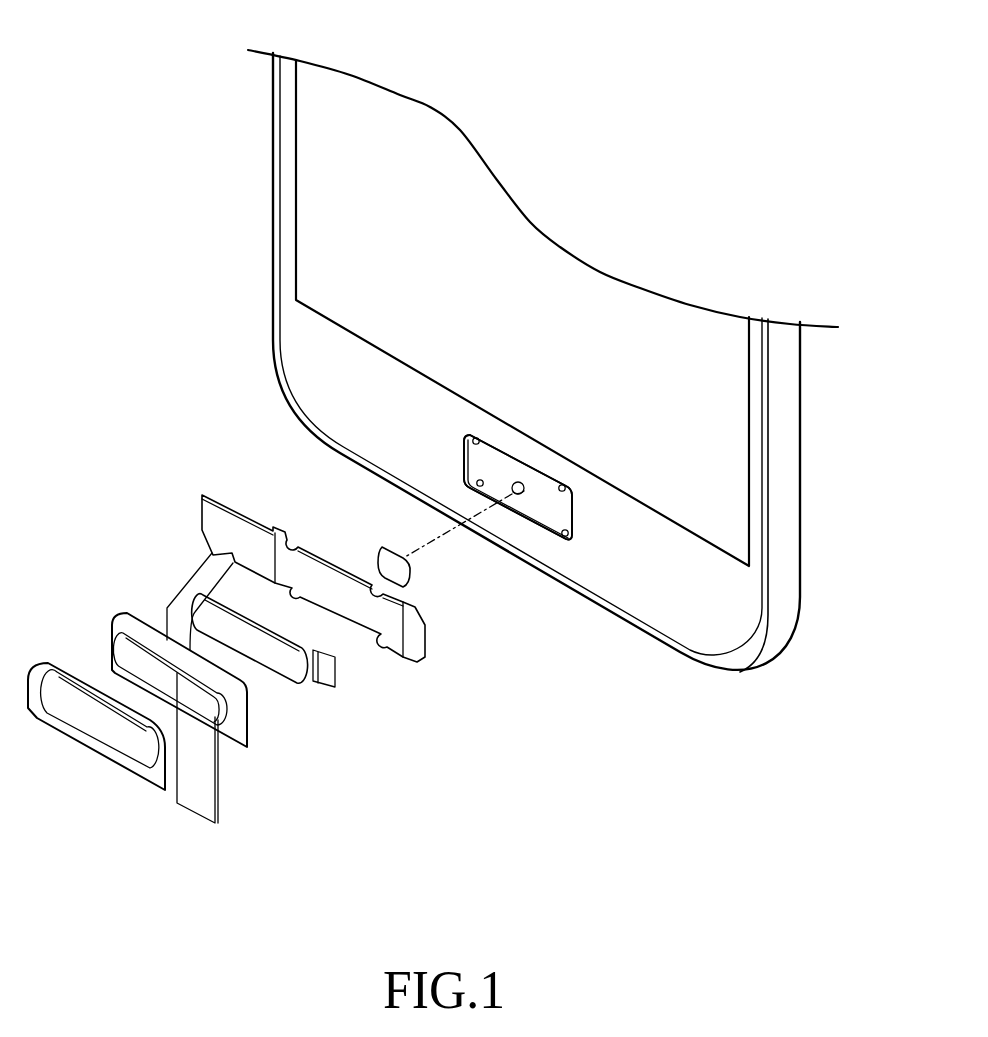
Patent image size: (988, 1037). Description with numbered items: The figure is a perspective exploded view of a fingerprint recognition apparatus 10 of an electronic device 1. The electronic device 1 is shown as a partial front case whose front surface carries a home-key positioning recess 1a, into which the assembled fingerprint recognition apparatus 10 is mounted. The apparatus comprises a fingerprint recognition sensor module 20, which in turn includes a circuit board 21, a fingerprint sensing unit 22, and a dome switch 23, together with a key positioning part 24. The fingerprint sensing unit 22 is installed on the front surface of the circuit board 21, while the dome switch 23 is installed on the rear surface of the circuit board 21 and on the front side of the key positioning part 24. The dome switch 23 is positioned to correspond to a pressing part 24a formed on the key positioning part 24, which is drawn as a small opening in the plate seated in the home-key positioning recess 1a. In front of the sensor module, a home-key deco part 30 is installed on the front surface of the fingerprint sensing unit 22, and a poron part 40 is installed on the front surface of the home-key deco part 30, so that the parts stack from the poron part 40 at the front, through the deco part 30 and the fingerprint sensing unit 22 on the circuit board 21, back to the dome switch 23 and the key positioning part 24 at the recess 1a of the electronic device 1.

The fingerprint recognition apparatus 10 is at (148, 78).
The electronic device 1 is at (284, 187).
The home-key positioning recess 1a is at (480, 463).
The fingerprint recognition sensor module 20 is at (578, 611).
The circuit board 21 is at (415, 638).
The fingerprint sensing unit 22 is at (290, 668).
The dome switch 23 is at (400, 572).
The key positioning part 24 is at (547, 505).
The pressing part 24a is at (513, 486).
The home-key deco part 30 is at (237, 730).
The poron part 40 is at (157, 778).